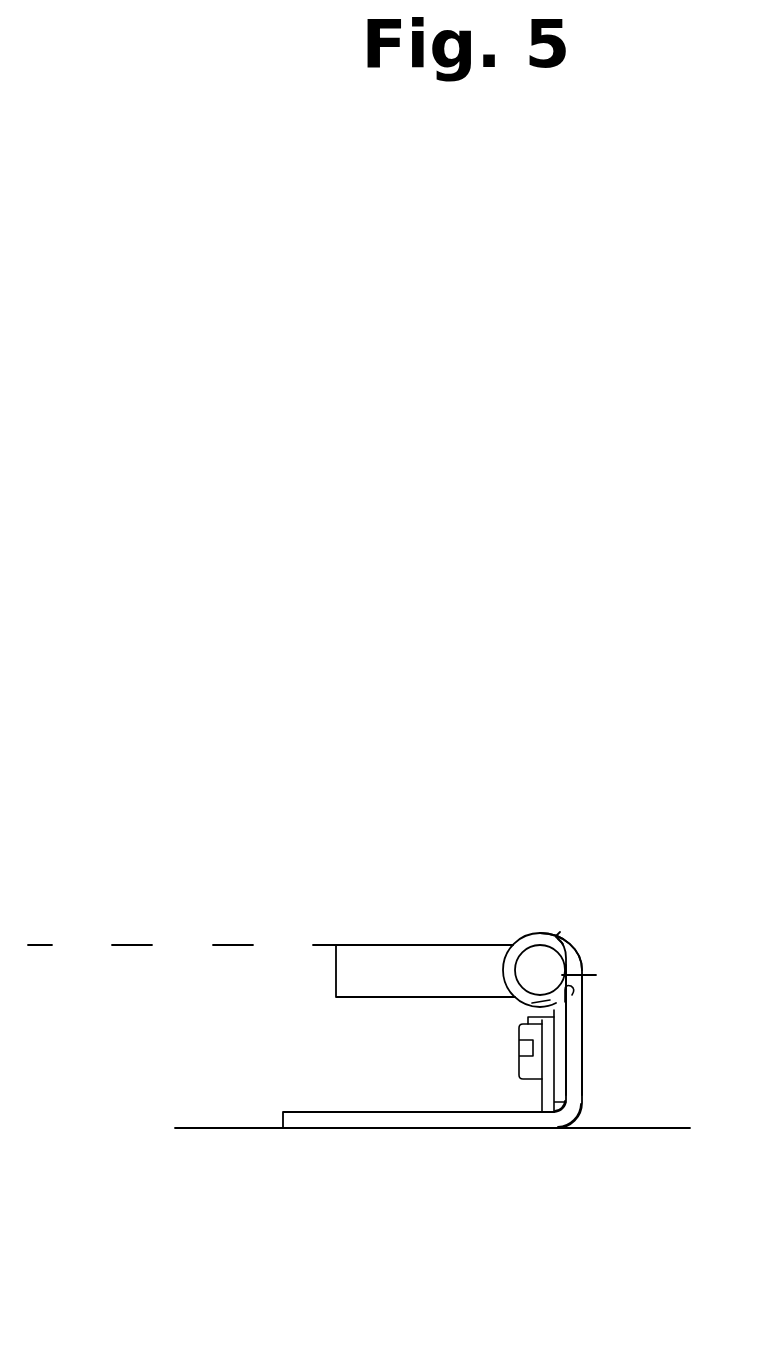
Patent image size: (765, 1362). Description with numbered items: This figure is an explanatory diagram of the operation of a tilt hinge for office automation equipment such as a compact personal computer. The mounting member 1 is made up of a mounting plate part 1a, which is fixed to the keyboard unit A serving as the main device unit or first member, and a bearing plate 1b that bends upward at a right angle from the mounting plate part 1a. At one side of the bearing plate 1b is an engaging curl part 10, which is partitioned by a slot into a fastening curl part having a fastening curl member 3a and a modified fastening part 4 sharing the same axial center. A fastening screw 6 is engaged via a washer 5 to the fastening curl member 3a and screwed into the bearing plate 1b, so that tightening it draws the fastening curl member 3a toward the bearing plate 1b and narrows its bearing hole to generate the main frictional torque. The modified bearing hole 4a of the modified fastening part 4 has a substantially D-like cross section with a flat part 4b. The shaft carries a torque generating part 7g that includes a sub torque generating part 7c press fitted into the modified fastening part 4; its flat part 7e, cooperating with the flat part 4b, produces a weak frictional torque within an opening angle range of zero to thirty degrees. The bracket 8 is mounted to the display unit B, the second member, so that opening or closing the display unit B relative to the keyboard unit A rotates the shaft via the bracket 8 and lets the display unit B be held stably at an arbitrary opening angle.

The mounting member 1 is at (411, 1130).
The mounting plate part 1a is at (338, 1121).
The bearing plate 1b is at (576, 1088).
The fastening curl member 3a is at (560, 1056).
The modified fastening part 4 is at (543, 932).
The modified bearing hole 4a is at (573, 1001).
The flat part 4b is at (537, 1003).
The washer 5 is at (547, 1107).
The fastening screw 6 is at (522, 1070).
The sub torque generating part 7c is at (536, 968).
The flat part 7e is at (596, 975).
The torque generating part 7g is at (565, 938).
The bracket 8 is at (359, 945).
The engaging curl part 10 is at (563, 925).
The keyboard unit A is at (208, 1127).
The display unit B is at (143, 942).